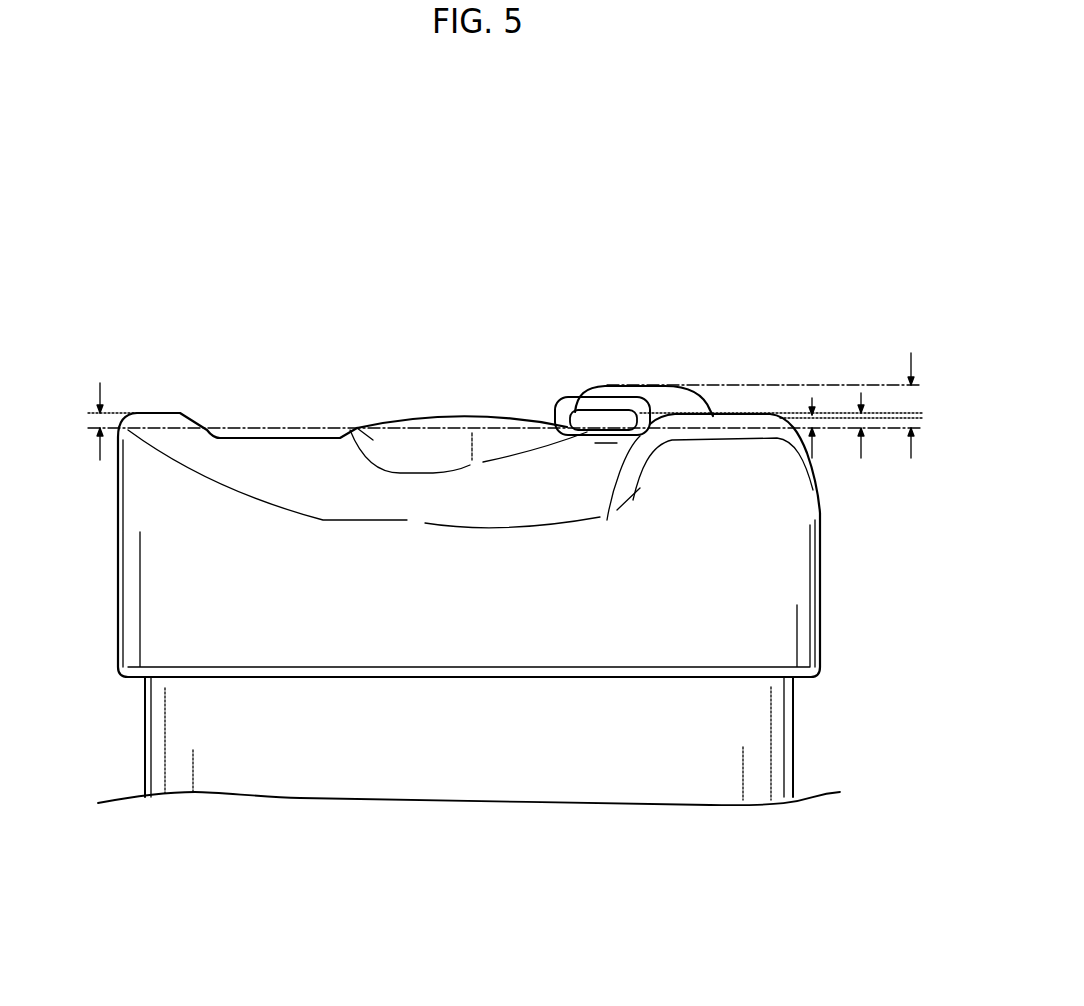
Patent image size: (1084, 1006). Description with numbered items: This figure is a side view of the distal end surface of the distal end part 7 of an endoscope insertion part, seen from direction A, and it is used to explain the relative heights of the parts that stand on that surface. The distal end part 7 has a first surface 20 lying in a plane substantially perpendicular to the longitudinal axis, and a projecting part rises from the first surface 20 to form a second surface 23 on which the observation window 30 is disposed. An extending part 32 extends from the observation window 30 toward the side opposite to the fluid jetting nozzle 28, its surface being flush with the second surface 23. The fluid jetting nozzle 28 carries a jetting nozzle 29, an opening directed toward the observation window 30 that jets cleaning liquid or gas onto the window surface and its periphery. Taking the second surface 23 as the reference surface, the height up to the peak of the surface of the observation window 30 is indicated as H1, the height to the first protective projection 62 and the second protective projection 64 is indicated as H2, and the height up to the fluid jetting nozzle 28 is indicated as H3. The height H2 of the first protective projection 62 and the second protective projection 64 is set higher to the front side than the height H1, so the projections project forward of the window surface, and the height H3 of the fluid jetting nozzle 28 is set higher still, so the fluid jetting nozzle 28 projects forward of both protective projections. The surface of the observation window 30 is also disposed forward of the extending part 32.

The distal end part 7 is at (527, 196).
The second protective projection 64 is at (160, 420).
The first surface 20 is at (270, 436).
The extending part 32 is at (357, 429).
The second surface 23 is at (380, 420).
The observation window 30 is at (470, 418).
The jetting nozzle 29 is at (580, 410).
The fluid jetting nozzle 28 is at (650, 397).
The first protective projection 62 is at (750, 423).
The height to the peak of the observation window surface H1 is at (817, 423).
The height to the protective projections H2 is at (97, 424).
The height to the fluid jetting nozzle H3 is at (911, 407).